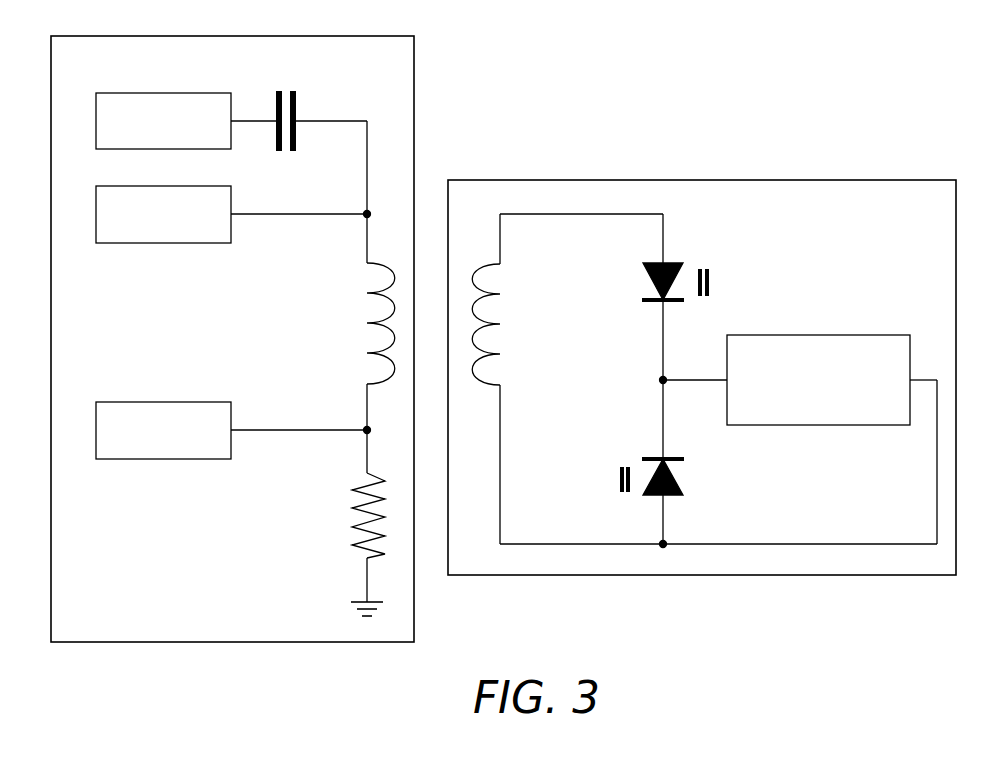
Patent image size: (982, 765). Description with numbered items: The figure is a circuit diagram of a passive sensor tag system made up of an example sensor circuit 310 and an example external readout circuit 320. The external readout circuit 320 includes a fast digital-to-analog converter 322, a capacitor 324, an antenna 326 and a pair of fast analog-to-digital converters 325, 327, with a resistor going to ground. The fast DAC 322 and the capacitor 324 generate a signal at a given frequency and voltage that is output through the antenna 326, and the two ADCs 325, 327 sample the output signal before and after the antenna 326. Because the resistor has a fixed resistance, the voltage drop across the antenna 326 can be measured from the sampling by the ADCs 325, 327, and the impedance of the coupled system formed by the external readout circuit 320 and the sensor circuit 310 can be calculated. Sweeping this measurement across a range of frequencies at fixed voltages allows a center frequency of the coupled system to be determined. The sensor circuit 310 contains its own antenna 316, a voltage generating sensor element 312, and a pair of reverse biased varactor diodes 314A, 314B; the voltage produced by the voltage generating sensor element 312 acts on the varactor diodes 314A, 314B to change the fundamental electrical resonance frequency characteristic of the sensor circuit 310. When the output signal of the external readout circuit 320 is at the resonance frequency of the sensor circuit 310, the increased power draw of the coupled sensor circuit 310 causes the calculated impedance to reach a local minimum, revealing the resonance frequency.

The sensor circuit 310 is at (743, 179).
The voltage generating sensor element 312 is at (818, 334).
The reverse biased varactor diode 314A is at (670, 263).
The reverse biased varactor diode 314B is at (645, 492).
The antenna 316 is at (507, 323).
The external readout circuit 320 is at (297, 35).
The fast digital-to-analog converter 322 is at (168, 91).
The capacitor 324 is at (297, 102).
The fast analog-to-digital converter 325 is at (175, 244).
The antenna 326 is at (367, 318).
The fast analog-to-digital converter 327 is at (175, 460).